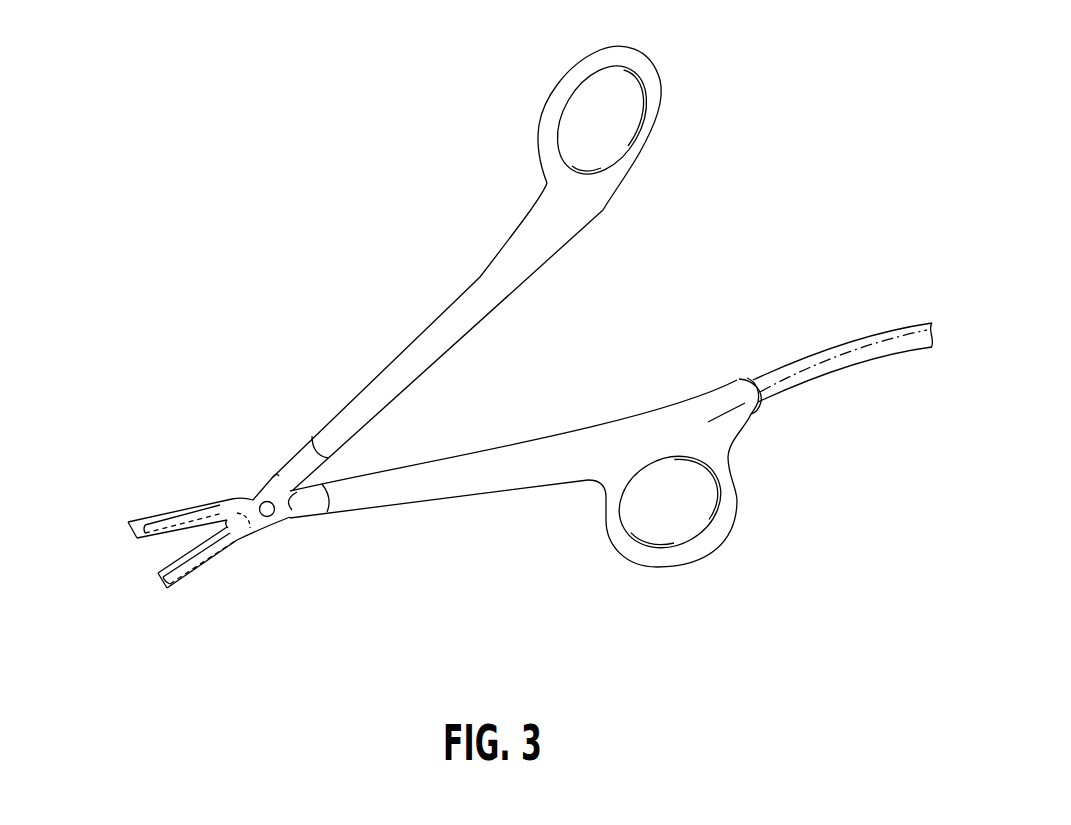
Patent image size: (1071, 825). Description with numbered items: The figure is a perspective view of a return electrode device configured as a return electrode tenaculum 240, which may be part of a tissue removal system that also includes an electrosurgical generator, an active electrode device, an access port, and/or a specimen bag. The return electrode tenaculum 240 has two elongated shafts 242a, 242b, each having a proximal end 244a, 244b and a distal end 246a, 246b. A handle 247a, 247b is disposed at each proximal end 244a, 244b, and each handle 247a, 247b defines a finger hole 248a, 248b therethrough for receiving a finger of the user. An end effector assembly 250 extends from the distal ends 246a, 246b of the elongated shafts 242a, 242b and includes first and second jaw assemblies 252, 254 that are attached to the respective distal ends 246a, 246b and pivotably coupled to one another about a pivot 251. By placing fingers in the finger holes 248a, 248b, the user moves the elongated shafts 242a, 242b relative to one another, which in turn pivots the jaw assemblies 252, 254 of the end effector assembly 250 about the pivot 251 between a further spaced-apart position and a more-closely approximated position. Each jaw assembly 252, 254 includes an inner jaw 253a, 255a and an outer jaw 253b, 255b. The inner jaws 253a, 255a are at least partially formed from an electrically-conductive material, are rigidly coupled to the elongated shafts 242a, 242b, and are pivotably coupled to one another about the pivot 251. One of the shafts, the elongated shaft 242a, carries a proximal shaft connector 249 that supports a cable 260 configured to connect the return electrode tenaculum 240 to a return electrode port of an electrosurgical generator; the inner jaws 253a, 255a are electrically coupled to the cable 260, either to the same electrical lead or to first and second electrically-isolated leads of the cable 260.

The return electrode tenaculum 240 is at (357, 298).
The elongated shaft 242a is at (467, 472).
The elongated shaft 242b is at (482, 287).
The proximal end 244a is at (604, 476).
The proximal end 244b is at (600, 199).
The distal end 246a is at (360, 497).
The distal end 246b is at (332, 432).
The handle 247a is at (727, 492).
The handle 247b is at (655, 88).
The finger hole 248a is at (672, 523).
The finger hole 248b is at (600, 120).
The proximal shaft connector 249 is at (737, 420).
The end effector assembly 250 is at (260, 452).
The pivot 251 is at (275, 518).
The first jaw assembly 252 is at (135, 497).
The inner jaw 253a is at (162, 517).
The outer jaw 253b is at (130, 527).
The second jaw assembly 254 is at (220, 563).
The inner jaw 255a is at (187, 582).
The outer jaw 255b is at (157, 580).
The cable 260 is at (848, 345).